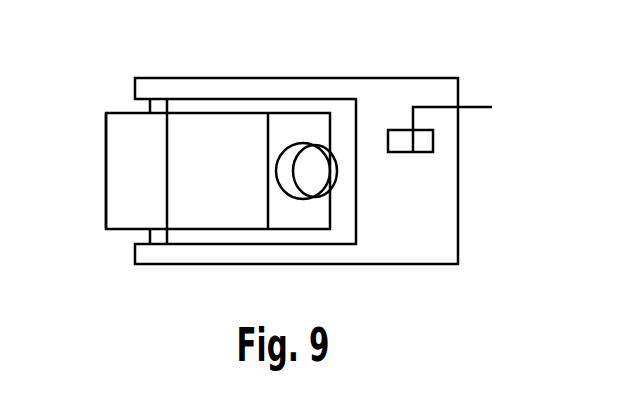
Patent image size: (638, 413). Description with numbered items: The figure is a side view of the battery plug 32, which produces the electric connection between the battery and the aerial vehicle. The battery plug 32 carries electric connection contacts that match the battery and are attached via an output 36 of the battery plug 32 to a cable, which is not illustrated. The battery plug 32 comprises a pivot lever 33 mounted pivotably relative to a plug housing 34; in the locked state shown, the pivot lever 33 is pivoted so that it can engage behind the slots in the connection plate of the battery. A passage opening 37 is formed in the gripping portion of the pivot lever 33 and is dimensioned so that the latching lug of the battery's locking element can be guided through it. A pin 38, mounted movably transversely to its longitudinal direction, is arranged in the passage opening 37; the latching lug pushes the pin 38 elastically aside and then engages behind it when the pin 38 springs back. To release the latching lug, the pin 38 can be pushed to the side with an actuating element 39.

The battery plug 32 is at (106, 180).
The pivot lever 33 is at (460, 200).
The plug housing 34 is at (106, 143).
The output 36 is at (315, 172).
The passage opening 37 is at (433, 140).
The pin 38 is at (400, 143).
The actuating element 39 is at (440, 105).